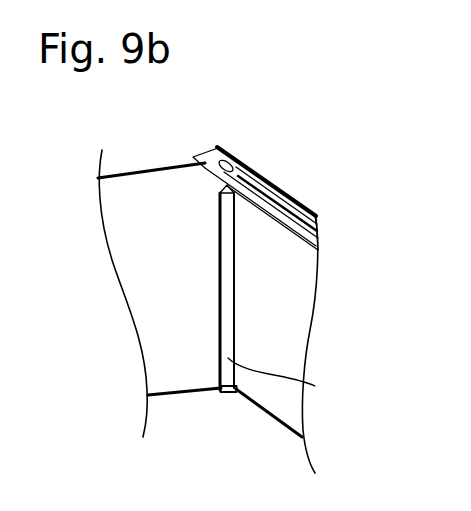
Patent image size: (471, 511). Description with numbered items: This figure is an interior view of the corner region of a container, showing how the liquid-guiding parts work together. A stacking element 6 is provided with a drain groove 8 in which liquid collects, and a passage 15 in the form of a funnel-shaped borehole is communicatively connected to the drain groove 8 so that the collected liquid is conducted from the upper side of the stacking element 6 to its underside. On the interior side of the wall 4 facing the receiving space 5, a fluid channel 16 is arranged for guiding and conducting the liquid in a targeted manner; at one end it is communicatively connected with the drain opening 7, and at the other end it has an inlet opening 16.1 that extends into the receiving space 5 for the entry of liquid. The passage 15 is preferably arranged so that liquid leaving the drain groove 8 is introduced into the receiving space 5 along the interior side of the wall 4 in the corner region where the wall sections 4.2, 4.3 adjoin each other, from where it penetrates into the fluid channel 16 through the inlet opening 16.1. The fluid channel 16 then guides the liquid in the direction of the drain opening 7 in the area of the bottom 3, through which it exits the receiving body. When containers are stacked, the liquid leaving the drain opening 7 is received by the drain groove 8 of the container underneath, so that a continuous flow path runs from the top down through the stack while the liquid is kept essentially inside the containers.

The bottom 3 is at (192, 432).
The wall 4 is at (300, 282).
The wall section 4.2 is at (297, 302).
The wall section 4.3 is at (152, 270).
The receiving space 5 is at (142, 192).
The stacking element 6 is at (209, 161).
The drain opening 7 is at (225, 393).
The drain groove 8 is at (302, 217).
The passage 15 is at (243, 163).
The fluid channel 16 is at (315, 386).
The inlet opening 16.1 is at (238, 170).